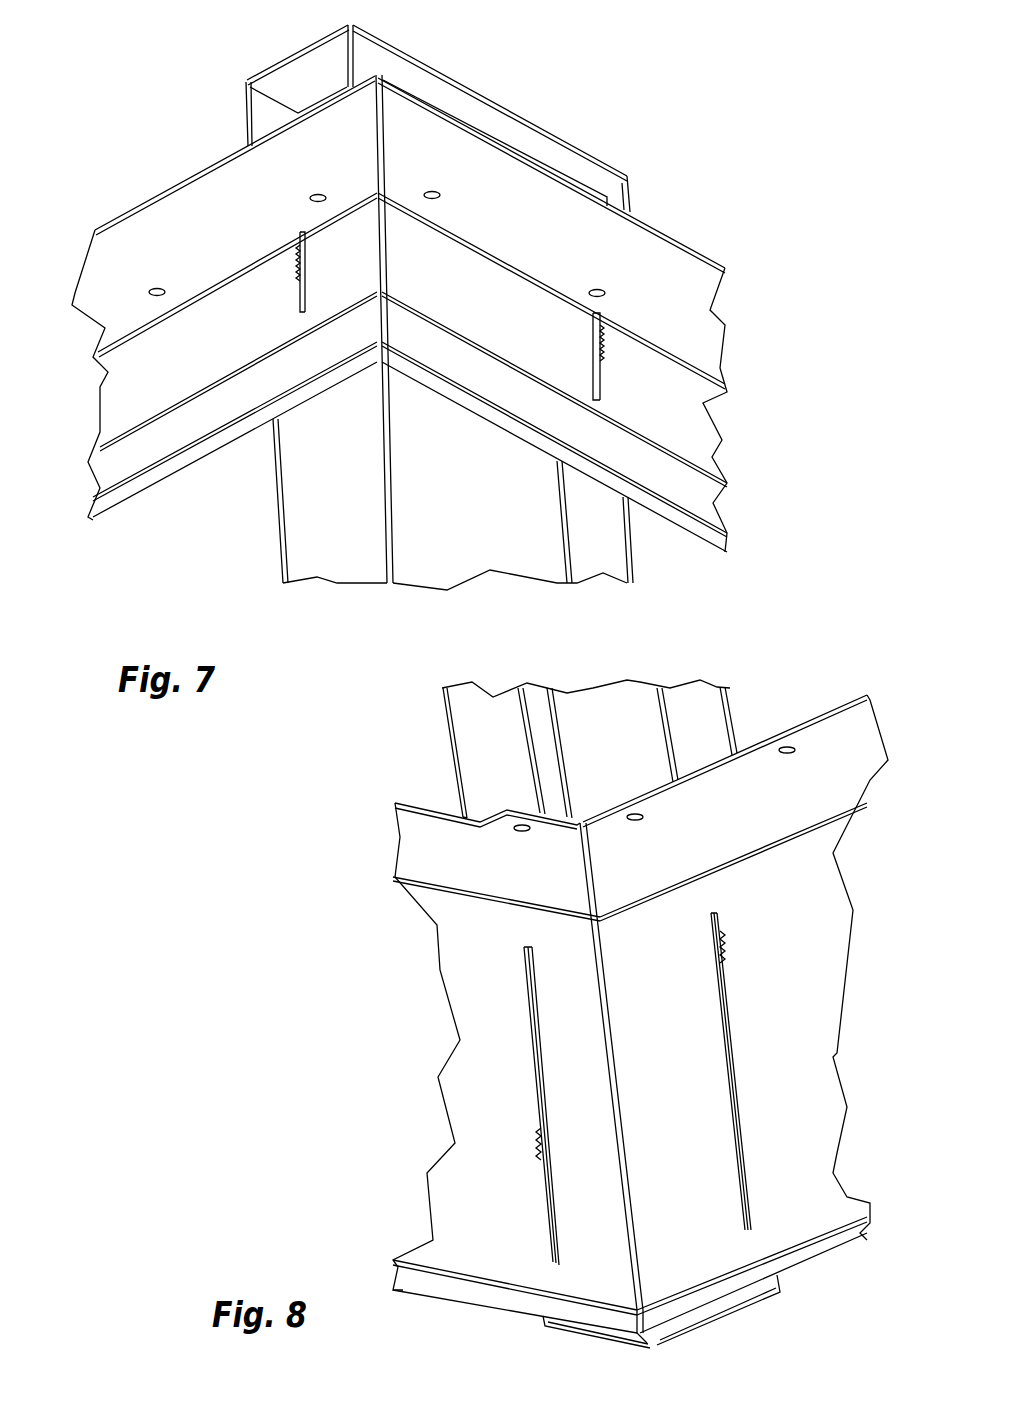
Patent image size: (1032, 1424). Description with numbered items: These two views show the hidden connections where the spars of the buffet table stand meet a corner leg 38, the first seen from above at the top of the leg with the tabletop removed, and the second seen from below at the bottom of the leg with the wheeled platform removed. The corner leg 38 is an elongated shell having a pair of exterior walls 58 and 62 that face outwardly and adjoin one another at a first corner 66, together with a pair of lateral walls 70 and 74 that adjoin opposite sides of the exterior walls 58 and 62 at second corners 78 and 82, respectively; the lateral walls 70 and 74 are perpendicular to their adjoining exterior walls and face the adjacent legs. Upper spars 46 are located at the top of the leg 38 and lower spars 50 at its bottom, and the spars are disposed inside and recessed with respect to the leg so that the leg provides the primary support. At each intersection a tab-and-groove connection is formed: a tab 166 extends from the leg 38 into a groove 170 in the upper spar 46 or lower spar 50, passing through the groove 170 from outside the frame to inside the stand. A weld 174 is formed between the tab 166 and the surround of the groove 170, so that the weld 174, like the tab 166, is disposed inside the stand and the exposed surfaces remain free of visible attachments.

In FIG. 7, the corner leg 38 is at (540, 137).
In FIG. 8, the corner leg 38 is at (687, 717).
In FIG. 7, the upper spar 46 is at (137, 238).
In FIG. 8, the lower spar 50 is at (823, 982).
In FIG. 7, the exterior wall 58 is at (294, 60).
In FIG. 8, the exterior wall 58 is at (587, 1337).
In FIG. 7, the exterior wall 62 is at (447, 78).
In FIG. 8, the exterior wall 62 is at (733, 1315).
In FIG. 7, the first corner 66 is at (352, 25).
In FIG. 8, the first corner 66 is at (657, 1343).
In FIG. 7, the lateral wall 70 is at (263, 118).
In FIG. 8, the lateral wall 70 is at (482, 773).
In FIG. 7, the lateral wall 74 is at (617, 195).
In FIG. 8, the lateral wall 74 is at (717, 738).
In FIG. 7, the second corner 78 is at (246, 82).
In FIG. 7, the second corner 82 is at (627, 177).
In FIG. 7, the tab 166 is at (296, 303).
In FIG. 8, the tab 166 is at (537, 1092).
In FIG. 7, the groove 170 is at (298, 283).
In FIG. 8, the groove 170 is at (523, 1005).
In FIG. 7, the weld 174 is at (297, 266).
In FIG. 8, the weld 174 is at (535, 1137).